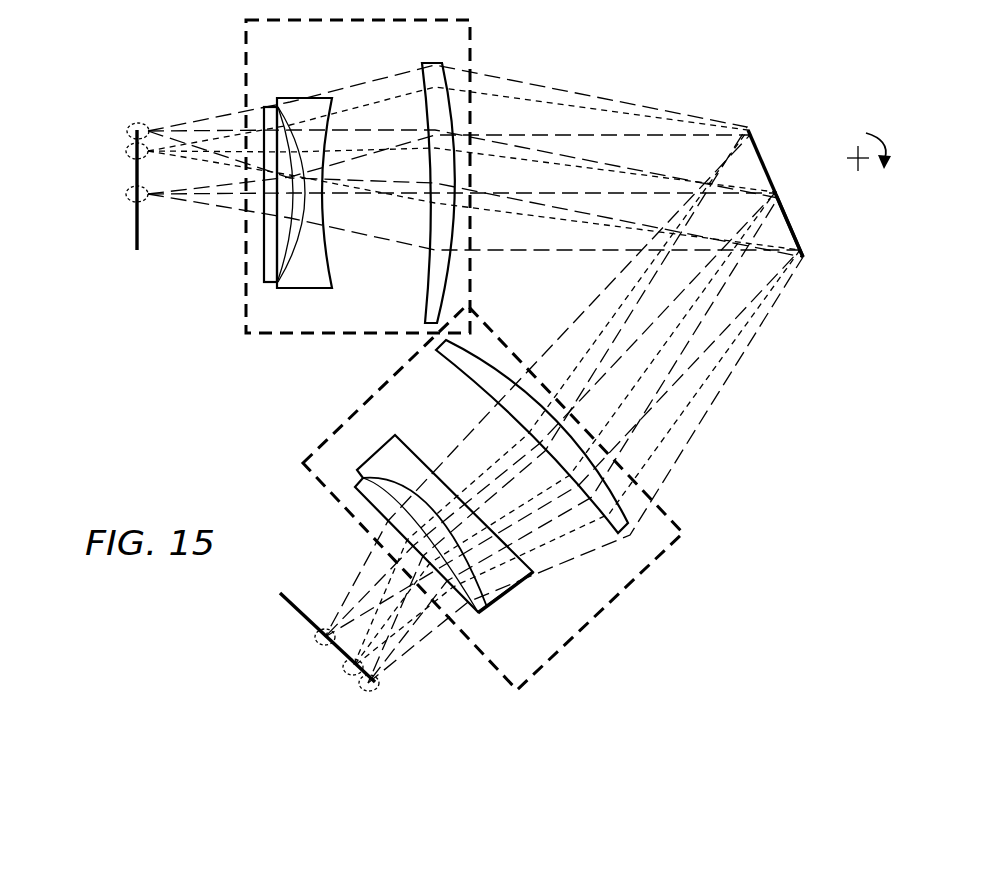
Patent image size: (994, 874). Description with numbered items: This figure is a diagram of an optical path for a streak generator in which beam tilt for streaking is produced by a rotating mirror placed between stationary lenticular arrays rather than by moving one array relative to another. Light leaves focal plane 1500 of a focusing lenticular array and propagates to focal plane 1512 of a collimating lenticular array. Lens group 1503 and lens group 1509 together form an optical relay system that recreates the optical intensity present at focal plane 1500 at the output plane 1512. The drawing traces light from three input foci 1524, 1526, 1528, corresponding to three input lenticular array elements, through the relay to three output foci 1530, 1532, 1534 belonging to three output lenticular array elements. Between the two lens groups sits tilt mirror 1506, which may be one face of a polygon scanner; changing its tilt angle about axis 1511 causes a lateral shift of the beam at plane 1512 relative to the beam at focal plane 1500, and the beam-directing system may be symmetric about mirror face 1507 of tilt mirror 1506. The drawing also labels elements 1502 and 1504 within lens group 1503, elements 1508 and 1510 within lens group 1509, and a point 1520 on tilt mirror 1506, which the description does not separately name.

The focal plane 1500 is at (136, 228).
The lens element 1502 is at (303, 97).
The lens group 1503 is at (245, 282).
The lens element 1504 is at (540, 86).
The tilt mirror 1506 is at (758, 149).
The mirror face 1507 is at (787, 220).
The lens element 1508 is at (457, 364).
The lens group 1509 is at (600, 617).
The lens element 1510 is at (505, 590).
The axis 1511 is at (848, 153).
The focal plane 1512 is at (293, 611).
The mirror pivot axis 1520 is at (777, 193).
The foci 1524 is at (136, 124).
The foci 1526 is at (128, 149).
The foci 1528 is at (128, 192).
The foci 1530 is at (325, 628).
The foci 1532 is at (347, 673).
The foci 1534 is at (379, 691).